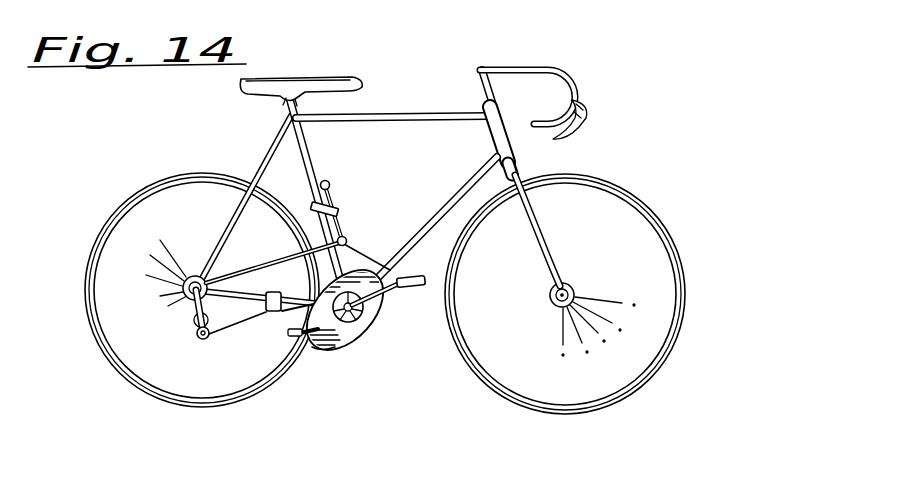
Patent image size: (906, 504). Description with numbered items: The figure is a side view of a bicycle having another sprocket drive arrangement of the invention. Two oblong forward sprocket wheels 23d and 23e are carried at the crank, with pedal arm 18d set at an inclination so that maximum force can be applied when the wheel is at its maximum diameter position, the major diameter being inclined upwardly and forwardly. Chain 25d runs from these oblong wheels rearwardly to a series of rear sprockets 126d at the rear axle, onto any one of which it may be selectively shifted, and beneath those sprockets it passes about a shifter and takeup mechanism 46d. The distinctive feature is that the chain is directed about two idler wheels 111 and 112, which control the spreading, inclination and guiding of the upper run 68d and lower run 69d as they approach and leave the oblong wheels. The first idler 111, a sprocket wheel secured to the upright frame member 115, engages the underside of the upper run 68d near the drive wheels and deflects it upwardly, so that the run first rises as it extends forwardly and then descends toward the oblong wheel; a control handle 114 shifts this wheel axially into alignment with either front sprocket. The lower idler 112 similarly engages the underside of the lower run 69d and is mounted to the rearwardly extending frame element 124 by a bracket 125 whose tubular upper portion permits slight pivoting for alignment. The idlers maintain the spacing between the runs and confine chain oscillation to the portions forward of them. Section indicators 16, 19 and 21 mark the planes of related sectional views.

The upright frame member 115 is at (309, 147).
The control handle 114 is at (331, 194).
The idler wheel 111 is at (346, 236).
The bracket 125 is at (281, 284).
The rear sprockets 126d is at (207, 273).
The chain 25d is at (264, 262).
The section line 21- 21 is at (268, 293).
The section line 16- 16 is at (160, 283).
The section line 19- 19 is at (337, 177).
The shifter and takeup mechanism 46d is at (189, 329).
The rearwardly extending frame element 124 is at (232, 327).
The idler wheel 112 is at (272, 313).
The lower run 69d is at (314, 349).
The forward sprocket wheel 23d is at (338, 348).
The forward sprocket wheel 23e is at (357, 343).
The pedal arm 18d is at (363, 317).
The upper run 68d is at (402, 262).